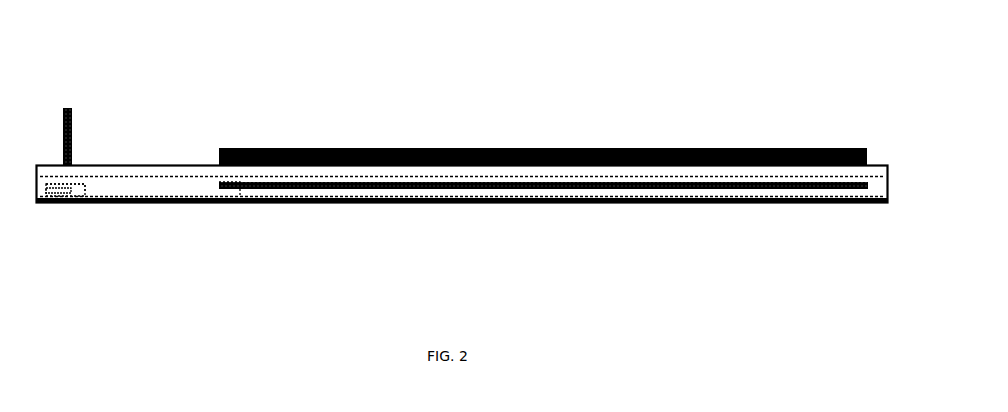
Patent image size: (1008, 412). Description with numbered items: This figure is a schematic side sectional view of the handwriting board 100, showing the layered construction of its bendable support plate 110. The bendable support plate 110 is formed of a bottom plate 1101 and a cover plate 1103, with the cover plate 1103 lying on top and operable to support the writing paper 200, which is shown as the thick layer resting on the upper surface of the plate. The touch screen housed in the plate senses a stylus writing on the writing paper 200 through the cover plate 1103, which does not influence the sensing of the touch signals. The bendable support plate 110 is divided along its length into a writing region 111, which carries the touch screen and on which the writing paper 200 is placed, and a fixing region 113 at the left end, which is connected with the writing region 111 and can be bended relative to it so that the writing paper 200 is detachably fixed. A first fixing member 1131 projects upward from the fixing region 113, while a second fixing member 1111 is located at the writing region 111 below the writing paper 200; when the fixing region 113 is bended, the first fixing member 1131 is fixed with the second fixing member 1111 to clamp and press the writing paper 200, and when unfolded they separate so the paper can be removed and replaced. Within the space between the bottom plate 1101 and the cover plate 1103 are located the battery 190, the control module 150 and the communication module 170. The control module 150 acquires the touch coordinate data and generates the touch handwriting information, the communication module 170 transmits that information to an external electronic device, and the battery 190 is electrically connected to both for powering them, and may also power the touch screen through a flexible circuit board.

The handwriting board 100 is at (404, 77).
The bendable support plate 110 is at (205, 204).
The writing region 111 is at (622, 204).
The fixing region 113 is at (107, 204).
The first fixing member 1131 is at (73, 119).
The battery 190 is at (85, 184).
The communication module 170 is at (47, 204).
The control module 150 is at (75, 204).
The second fixing member 1111 is at (247, 203).
The bottom plate 1101 is at (430, 204).
The cover plate 1103 is at (515, 174).
The writing paper 200 is at (683, 147).